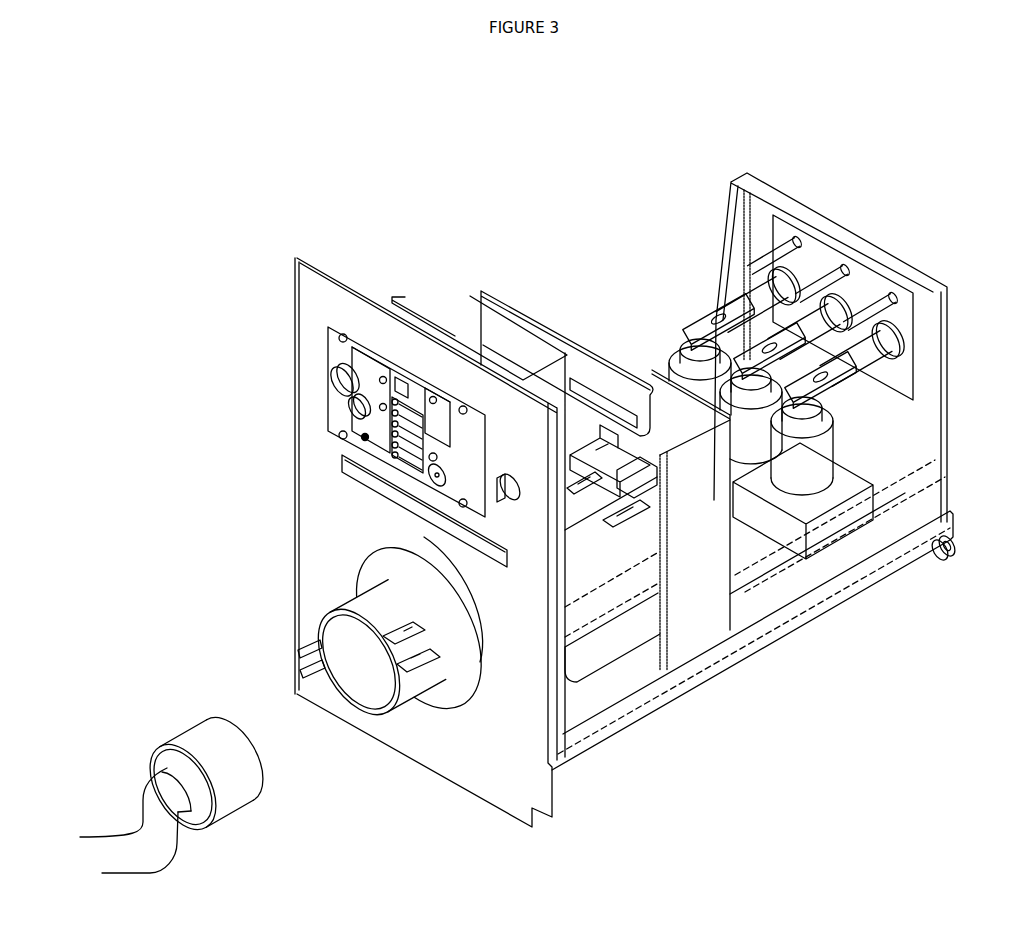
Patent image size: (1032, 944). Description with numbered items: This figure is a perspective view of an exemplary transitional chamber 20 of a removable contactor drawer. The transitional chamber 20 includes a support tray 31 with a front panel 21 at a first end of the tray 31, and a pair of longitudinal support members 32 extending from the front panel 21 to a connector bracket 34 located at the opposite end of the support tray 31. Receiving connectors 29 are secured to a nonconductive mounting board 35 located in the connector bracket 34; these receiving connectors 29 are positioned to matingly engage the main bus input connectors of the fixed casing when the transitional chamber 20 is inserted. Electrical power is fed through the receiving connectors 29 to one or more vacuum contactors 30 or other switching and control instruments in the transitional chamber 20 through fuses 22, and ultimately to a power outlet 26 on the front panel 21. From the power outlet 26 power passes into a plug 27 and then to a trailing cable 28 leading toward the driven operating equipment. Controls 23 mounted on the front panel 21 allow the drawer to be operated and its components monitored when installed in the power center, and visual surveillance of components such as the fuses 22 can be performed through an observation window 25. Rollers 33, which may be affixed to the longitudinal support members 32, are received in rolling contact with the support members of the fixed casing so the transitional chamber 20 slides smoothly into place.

The transitional chamber 20 is at (315, 263).
The front panel 21 is at (297, 548).
The fuses 22 is at (647, 528).
The controls 23 is at (330, 357).
The observation window 25 is at (337, 461).
The power outlet 26 is at (318, 620).
The plug 27 is at (193, 719).
The trailing cable 28 is at (166, 766).
The receiving connectors 29 is at (706, 320).
The vacuum contactors 30 is at (675, 345).
The support tray 31 is at (855, 547).
The longitudinal support members 32 is at (828, 620).
The rollers 33 is at (946, 562).
The connector bracket 34 is at (870, 235).
The mounting board 35 is at (775, 227).